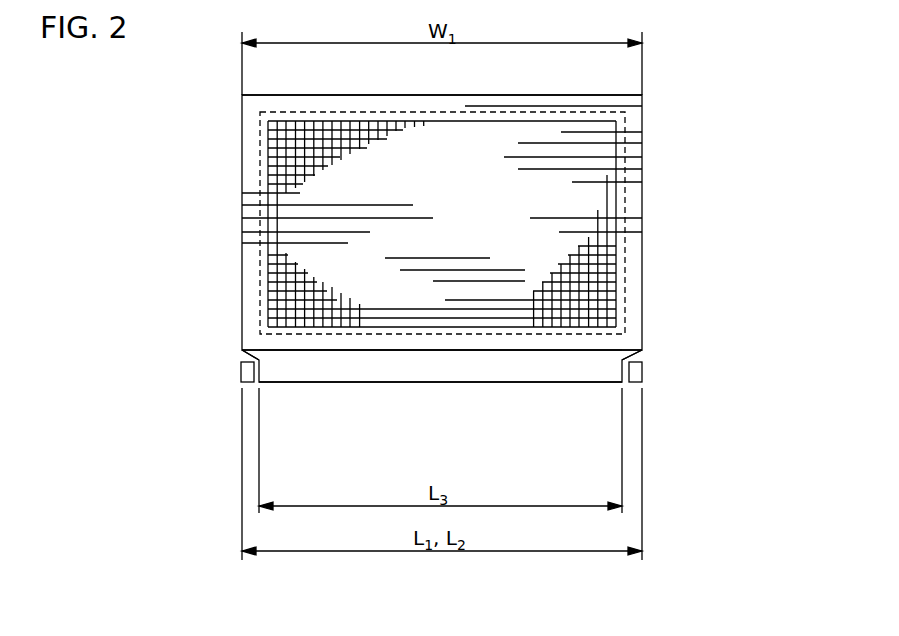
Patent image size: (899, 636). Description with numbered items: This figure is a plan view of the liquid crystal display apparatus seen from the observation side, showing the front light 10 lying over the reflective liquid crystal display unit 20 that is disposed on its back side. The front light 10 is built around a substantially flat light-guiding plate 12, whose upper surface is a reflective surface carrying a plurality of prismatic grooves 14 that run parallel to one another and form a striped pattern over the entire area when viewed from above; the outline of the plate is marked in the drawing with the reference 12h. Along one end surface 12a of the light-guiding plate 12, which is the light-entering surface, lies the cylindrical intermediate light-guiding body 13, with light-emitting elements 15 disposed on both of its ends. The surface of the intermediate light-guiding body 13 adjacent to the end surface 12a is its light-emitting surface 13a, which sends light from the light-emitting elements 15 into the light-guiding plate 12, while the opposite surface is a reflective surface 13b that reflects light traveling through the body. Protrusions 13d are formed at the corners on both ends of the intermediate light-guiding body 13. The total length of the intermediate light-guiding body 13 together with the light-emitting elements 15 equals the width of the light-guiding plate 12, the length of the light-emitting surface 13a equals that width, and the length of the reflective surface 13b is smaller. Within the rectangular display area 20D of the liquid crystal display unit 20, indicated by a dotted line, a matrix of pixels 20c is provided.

The front light 10 is at (656, 113).
The light-guiding plate 12 is at (640, 152).
The upper surface of substrate 12h is at (592, 93).
The end surface 12a is at (380, 352).
The intermediate light-guiding body 13 is at (598, 369).
The light-emitting surface 13a is at (486, 350).
The reflective surface 13b is at (433, 383).
The protrusion 13d is at (256, 352).
The prismatic groove 14 is at (382, 205).
The light-emitting element 15 is at (248, 371).
The reflective liquid crystal display unit 20 is at (250, 108).
The matrix of pixels 20c is at (596, 305).
The display area 20D is at (625, 268).